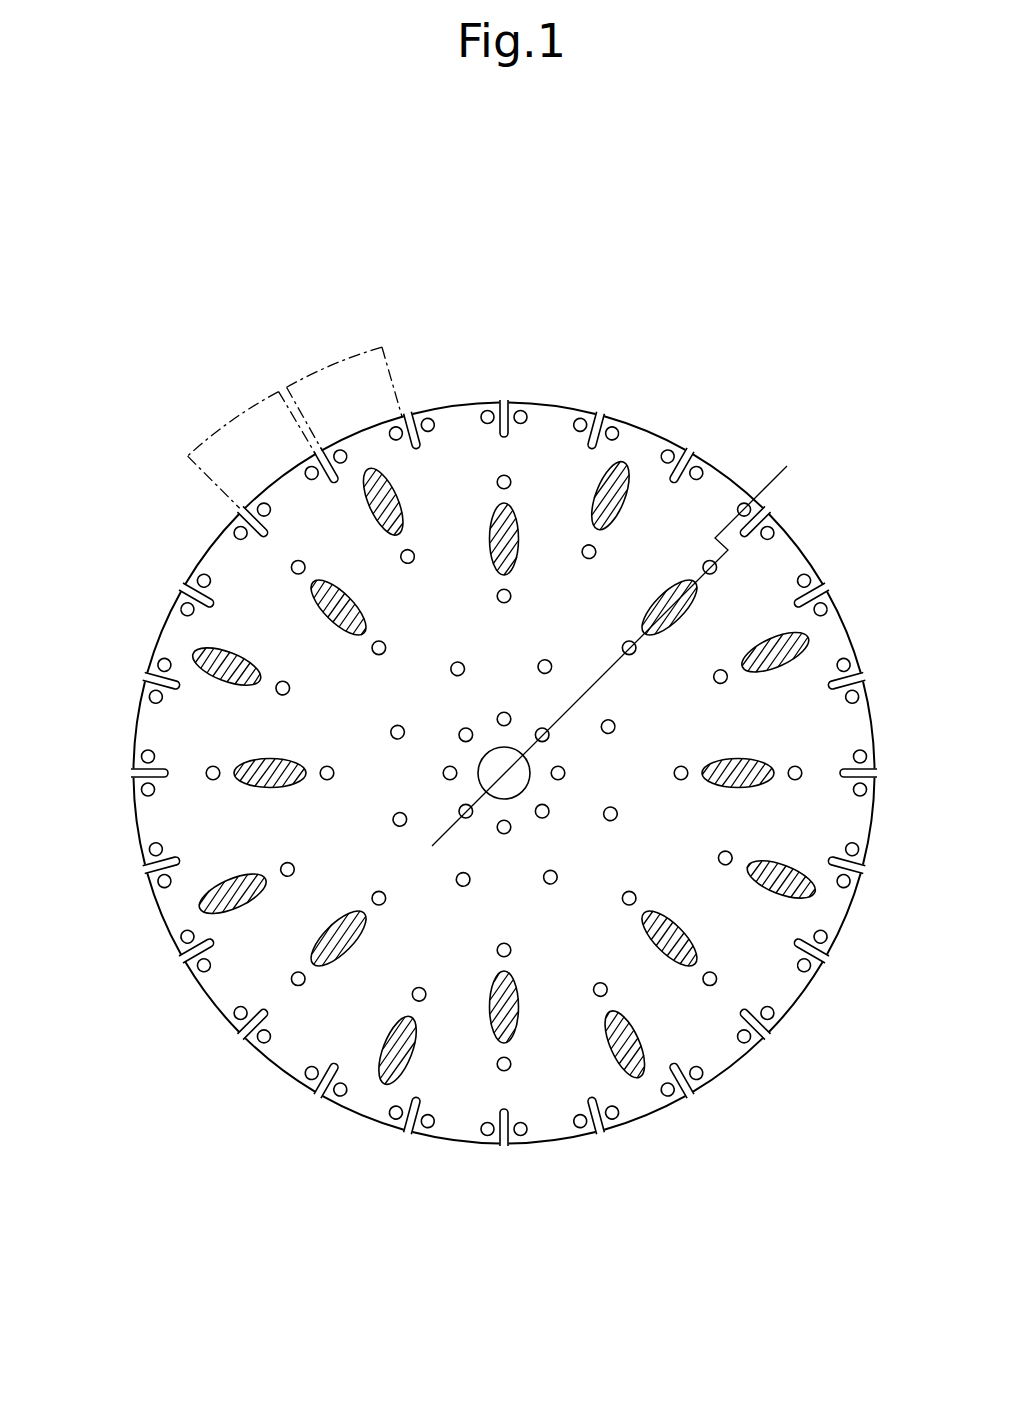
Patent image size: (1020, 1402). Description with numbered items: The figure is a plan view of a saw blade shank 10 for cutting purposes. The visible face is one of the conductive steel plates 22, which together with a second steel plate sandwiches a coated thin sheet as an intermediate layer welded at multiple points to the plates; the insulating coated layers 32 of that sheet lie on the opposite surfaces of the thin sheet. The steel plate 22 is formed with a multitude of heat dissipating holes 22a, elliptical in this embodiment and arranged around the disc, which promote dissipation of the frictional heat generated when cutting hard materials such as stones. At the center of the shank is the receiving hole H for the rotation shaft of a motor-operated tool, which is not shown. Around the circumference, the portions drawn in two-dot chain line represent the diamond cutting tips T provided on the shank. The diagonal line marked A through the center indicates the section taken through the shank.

The saw blade shank 10 is at (462, 777).
The steel plate 22 is at (553, 1117).
The heat dissipating hole 22a is at (385, 1073).
The coated layer 32 is at (190, 650).
The receiving hole H is at (491, 752).
The diamond cutting tip T is at (340, 365).
The section line A- A is at (790, 478).